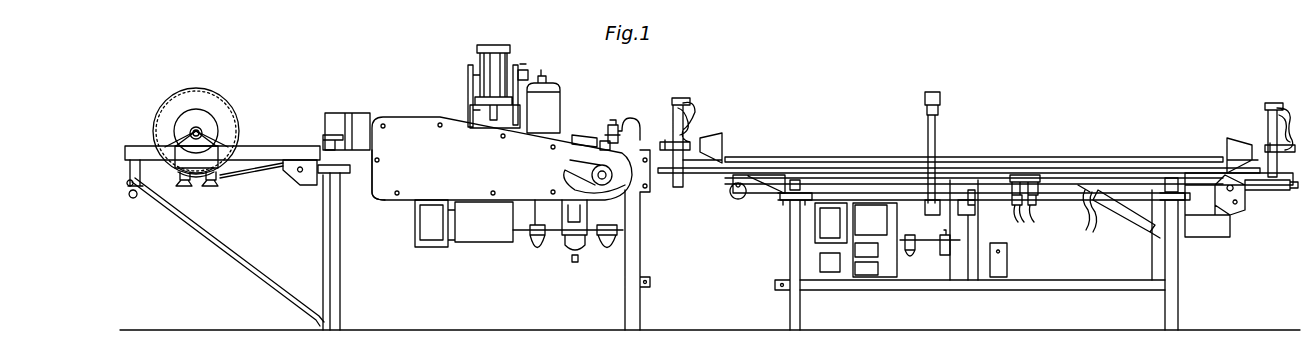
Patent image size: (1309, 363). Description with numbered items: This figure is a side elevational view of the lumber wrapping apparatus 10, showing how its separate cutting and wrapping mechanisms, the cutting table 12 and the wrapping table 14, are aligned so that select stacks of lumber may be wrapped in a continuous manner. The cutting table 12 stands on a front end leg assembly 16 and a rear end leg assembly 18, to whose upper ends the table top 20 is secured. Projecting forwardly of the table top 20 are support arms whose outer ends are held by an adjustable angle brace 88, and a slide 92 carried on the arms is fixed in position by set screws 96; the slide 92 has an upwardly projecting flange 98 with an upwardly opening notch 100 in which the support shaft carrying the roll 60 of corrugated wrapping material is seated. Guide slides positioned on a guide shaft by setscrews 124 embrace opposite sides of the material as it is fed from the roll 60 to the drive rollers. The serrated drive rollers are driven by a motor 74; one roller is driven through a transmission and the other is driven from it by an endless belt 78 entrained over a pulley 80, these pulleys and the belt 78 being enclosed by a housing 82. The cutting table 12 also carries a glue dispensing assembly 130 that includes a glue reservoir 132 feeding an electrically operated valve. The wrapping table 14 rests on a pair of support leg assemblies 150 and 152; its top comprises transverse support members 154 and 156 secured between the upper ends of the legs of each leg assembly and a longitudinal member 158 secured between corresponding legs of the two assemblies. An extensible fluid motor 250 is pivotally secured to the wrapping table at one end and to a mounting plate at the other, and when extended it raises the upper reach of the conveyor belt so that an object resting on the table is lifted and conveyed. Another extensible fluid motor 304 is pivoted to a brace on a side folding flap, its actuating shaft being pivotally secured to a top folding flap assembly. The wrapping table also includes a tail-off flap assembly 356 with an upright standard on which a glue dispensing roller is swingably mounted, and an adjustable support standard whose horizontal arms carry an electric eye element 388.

The lumber wrapping apparatus 10 is at (787, 112).
The cutting table 12 is at (399, 105).
The wrapping table 14 is at (1031, 145).
The front end leg assembly 16 is at (340, 278).
The rear end leg assembly 18 is at (635, 300).
The table top 20 is at (506, 36).
The roll 60 is at (216, 80).
The motor 74 is at (369, 118).
The endless belt 78 is at (568, 182).
The pulley 80 is at (610, 183).
The housing 82 is at (382, 205).
The adjustable angle brace 88 is at (238, 260).
The slide 92 is at (214, 153).
The set screws 96 is at (210, 185).
The upwardly projecting flange 98 is at (206, 140).
The notch 100 is at (188, 132).
The setscrews 124 is at (327, 137).
The glue dispensing assembly 130 is at (619, 122).
The glue reservoir 132 is at (556, 113).
The support leg assembly 150 is at (797, 330).
The support leg assembly 152 is at (1180, 320).
The transverse support member 154 is at (806, 183).
The transverse support member 156 is at (1168, 180).
The longitudinal member 158 is at (1013, 287).
The extensible fluid motor 250 is at (1113, 224).
The extensible fluid motor 304 is at (1035, 207).
The tail-off flap assembly 356 is at (689, 100).
The electric eye element 388 is at (939, 95).